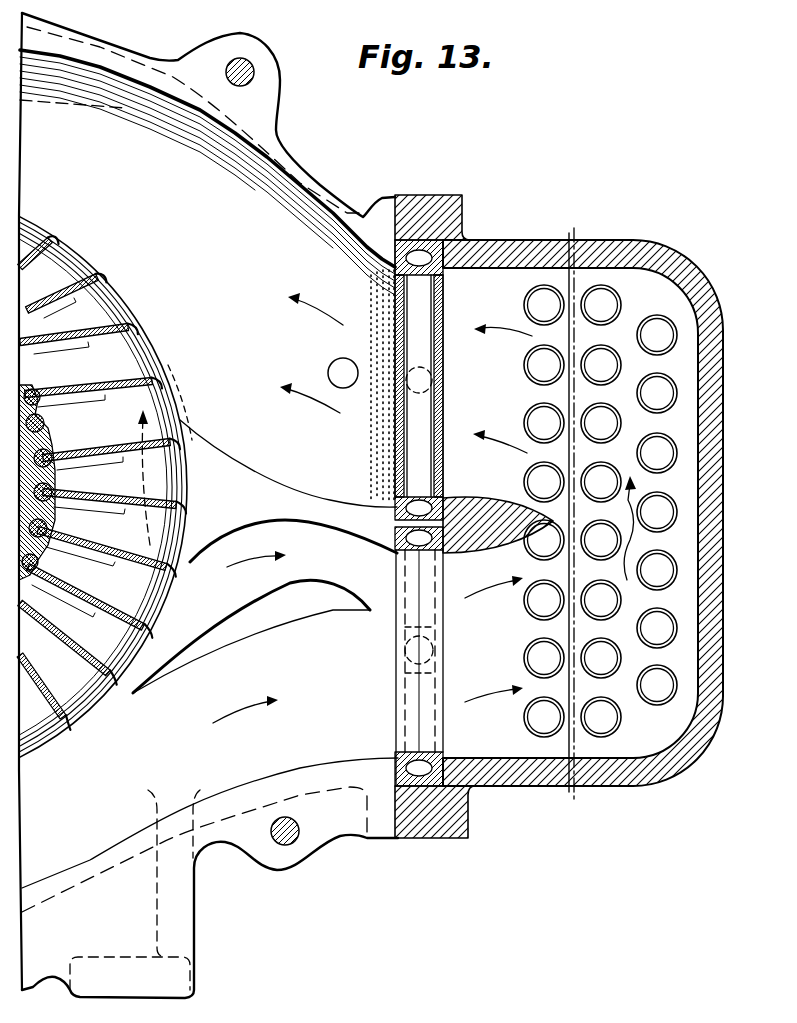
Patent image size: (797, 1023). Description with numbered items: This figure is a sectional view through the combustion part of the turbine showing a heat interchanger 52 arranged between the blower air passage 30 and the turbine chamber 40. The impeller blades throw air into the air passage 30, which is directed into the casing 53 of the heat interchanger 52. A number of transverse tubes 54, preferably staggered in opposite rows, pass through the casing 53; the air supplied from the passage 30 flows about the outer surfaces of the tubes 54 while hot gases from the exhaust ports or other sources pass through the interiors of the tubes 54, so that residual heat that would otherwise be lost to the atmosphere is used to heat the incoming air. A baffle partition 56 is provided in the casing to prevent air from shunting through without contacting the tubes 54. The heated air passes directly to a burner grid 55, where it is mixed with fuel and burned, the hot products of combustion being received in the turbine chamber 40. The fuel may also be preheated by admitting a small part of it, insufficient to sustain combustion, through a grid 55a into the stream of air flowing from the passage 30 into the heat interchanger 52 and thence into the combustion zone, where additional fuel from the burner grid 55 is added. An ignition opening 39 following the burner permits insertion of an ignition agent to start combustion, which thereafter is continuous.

The air passage 30 is at (210, 878).
The ignition opening 39 is at (328, 370).
The turbine chamber 40 is at (207, 154).
The heat interchanger 52 is at (510, 240).
The casing 53 is at (508, 758).
The transverse tubes 54 is at (528, 413).
The burner grid 55 is at (398, 433).
The grid 55a is at (398, 687).
The baffle partition 56 is at (466, 498).